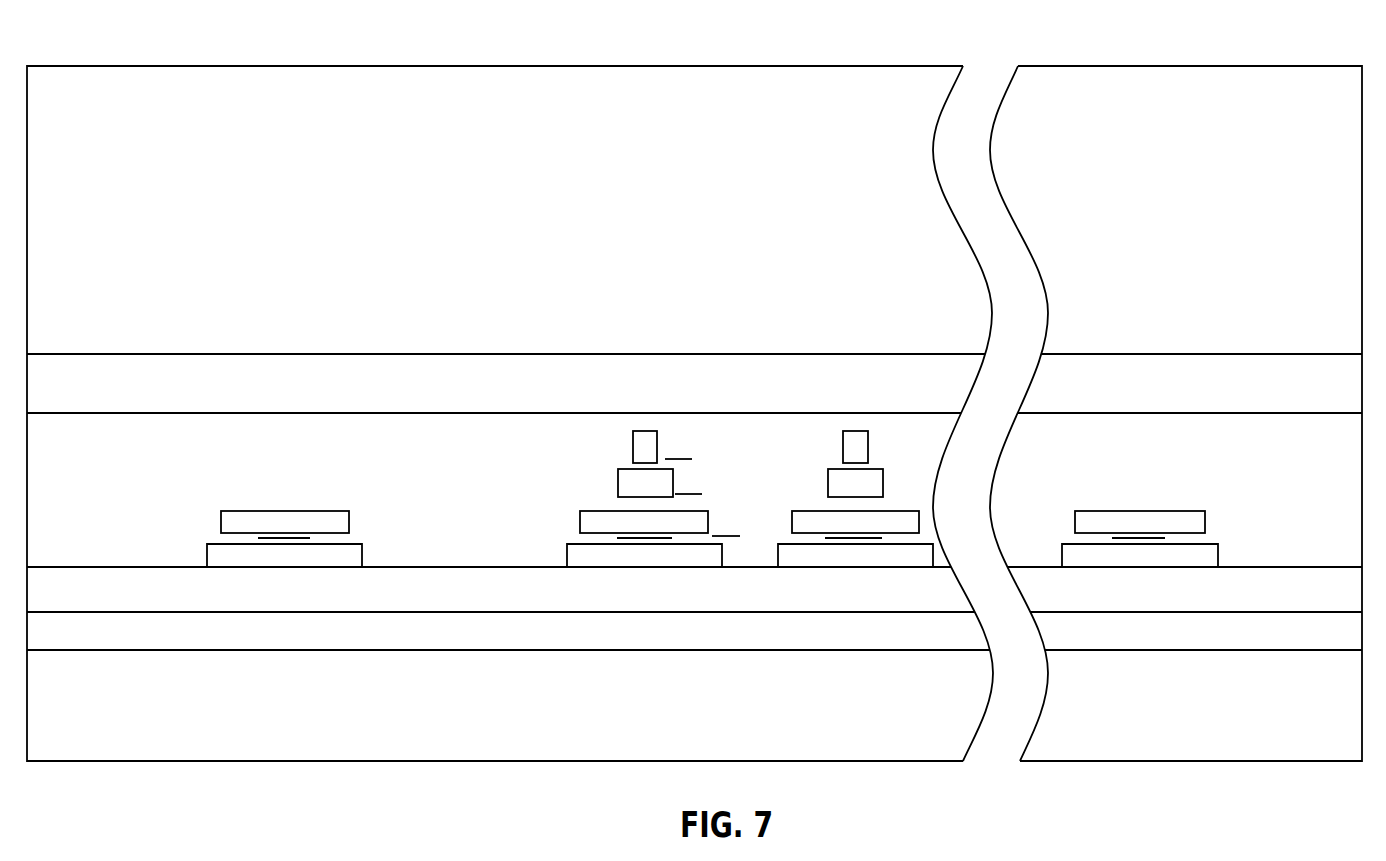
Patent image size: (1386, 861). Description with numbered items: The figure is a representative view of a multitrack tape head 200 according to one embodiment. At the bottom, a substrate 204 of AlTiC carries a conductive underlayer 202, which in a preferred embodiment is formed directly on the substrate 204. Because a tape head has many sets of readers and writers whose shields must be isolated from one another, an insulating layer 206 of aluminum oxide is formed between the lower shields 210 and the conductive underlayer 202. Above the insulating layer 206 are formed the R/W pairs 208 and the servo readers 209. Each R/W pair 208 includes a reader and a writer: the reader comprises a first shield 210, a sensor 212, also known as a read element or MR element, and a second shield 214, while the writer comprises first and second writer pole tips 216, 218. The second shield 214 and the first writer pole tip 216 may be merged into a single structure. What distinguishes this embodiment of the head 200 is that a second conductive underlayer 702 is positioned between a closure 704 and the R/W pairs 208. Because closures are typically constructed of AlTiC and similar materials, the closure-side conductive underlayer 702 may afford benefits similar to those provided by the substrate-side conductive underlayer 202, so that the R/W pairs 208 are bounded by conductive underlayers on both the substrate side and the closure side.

The tape head 200 is at (183, 37).
The closure 704 is at (230, 262).
The conductive underlayer 702 is at (230, 389).
The R/W pairs 208 is at (792, 413).
The servo readers 209 is at (337, 449).
The first shield (S1) 210 is at (568, 553).
The sensor 212 is at (643, 537).
The second shield (S2) 214 is at (580, 525).
The first writer pole tip (P1) 216 is at (618, 487).
The second writer pole tip (P2) 218 is at (632, 450).
The insulating layer 206 is at (230, 596).
The conductive underlayer 202 is at (230, 643).
The substrate 204 is at (230, 716).